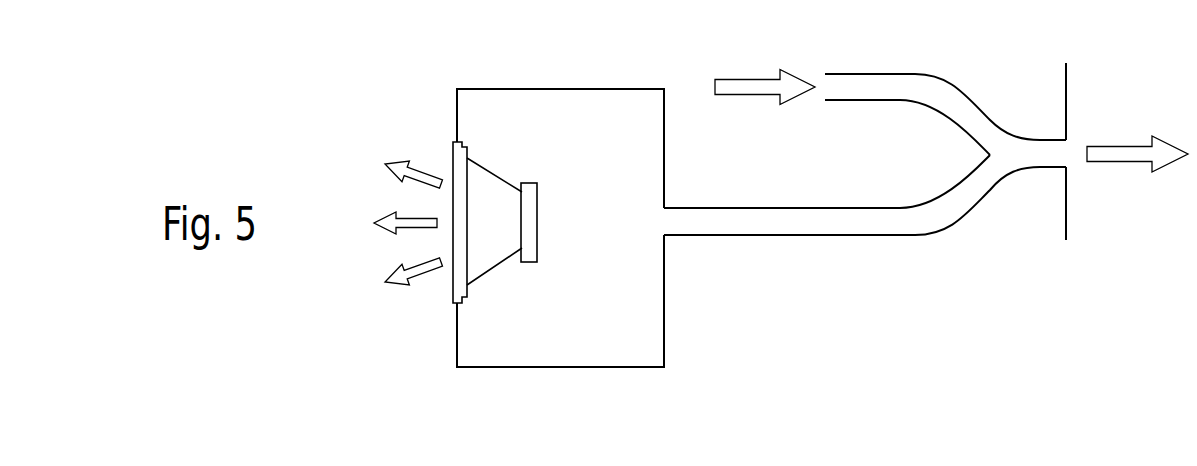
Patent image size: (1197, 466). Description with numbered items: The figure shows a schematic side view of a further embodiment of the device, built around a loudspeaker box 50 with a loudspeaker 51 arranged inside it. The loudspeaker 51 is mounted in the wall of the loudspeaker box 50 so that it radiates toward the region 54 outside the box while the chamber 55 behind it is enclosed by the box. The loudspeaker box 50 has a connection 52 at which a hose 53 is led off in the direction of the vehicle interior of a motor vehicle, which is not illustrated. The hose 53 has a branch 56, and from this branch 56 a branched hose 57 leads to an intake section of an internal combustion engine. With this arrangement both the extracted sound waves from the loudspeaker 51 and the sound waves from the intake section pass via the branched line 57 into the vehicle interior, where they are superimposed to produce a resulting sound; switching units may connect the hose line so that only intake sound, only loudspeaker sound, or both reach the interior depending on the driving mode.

The loudspeaker box 50 is at (664, 329).
The loudspeaker 51 is at (488, 187).
The connection 52 is at (664, 208).
The hose 53 is at (857, 216).
The exterior region 54 is at (428, 340).
The interior chamber 55 is at (571, 340).
The branch 56 is at (1014, 149).
The branched hose 57 is at (887, 86).